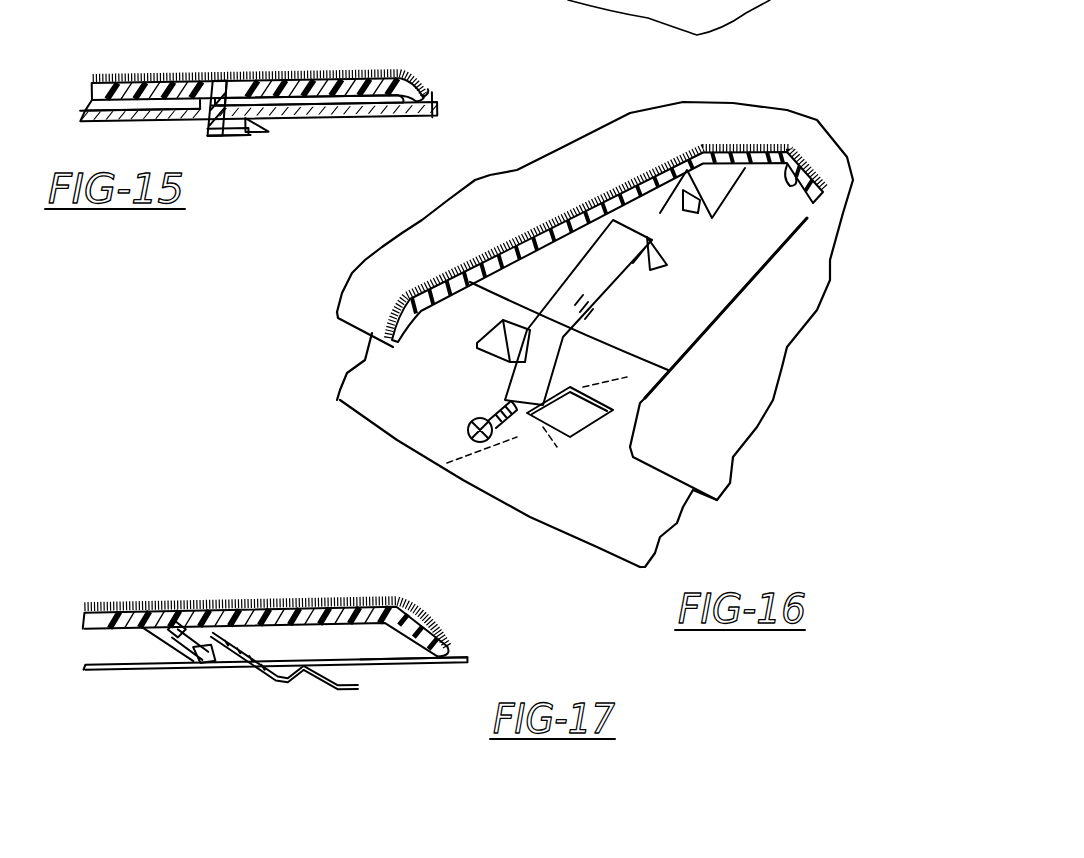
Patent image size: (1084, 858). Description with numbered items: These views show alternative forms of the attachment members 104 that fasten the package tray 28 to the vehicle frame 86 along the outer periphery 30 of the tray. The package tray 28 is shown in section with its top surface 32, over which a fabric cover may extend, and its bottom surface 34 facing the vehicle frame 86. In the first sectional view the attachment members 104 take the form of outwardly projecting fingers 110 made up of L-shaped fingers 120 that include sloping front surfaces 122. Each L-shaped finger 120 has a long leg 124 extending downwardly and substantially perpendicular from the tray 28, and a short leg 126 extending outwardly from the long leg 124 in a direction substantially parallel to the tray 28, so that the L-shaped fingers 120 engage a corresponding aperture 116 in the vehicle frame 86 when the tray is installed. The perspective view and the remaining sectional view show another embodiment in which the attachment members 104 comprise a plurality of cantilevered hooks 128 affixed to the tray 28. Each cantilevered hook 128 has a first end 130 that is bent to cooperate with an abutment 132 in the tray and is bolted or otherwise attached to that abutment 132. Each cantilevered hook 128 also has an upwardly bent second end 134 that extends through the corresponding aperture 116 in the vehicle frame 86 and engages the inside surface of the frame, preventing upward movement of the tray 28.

In FIG. 15, the package tray 28 is at (137, 90).
In FIG. 16, the package tray 28 is at (773, 343).
In FIG. 17, the package tray 28 is at (332, 602).
In FIG. 15, the outer periphery 30 is at (425, 97).
In FIG. 16, the outer periphery 30 is at (352, 312).
In FIG. 17, the outer periphery 30 is at (448, 652).
In FIG. 15, the top surface 32 is at (267, 72).
In FIG. 16, the top surface 32 is at (562, 205).
In FIG. 17, the top surface 32 is at (360, 603).
In FIG. 15, the bottom surface 34 is at (333, 98).
In FIG. 16, the bottom surface 34 is at (797, 168).
In FIG. 17, the bottom surface 34 is at (402, 662).
In FIG. 15, the vehicle frame 86 is at (390, 110).
In FIG. 16, the vehicle frame 86 is at (425, 410).
In FIG. 17, the vehicle frame 86 is at (140, 668).
In FIG. 15, the attachment members 104 is at (316, 180).
In FIG. 16, the attachment members 104 is at (638, 299).
In FIG. 17, the attachment members 104 is at (248, 718).
In FIG. 15, the outwardly projecting fingers 110 is at (234, 160).
In FIG. 15, the aperture 116 is at (203, 127).
In FIG. 16, the aperture 116 is at (560, 422).
In FIG. 17, the aperture 116 is at (221, 668).
In FIG. 15, the L-shaped fingers 120 is at (207, 133).
In FIG. 15, the sloping front surfaces 122 is at (262, 120).
In FIG. 15, the long leg 124 is at (223, 87).
In FIG. 15, the short leg 126 is at (240, 134).
In FIG. 16, the cantilevered hooks 128 is at (618, 265).
In FIG. 17, the cantilevered hooks 128 is at (257, 672).
In FIG. 16, the first end 130 is at (667, 262).
In FIG. 17, the first end 130 is at (202, 663).
In FIG. 16, the abutment 132 is at (700, 200).
In FIG. 17, the abutment 132 is at (199, 608).
In FIG. 16, the upwardly bent second end 134 is at (540, 285).
In FIG. 17, the upwardly bent second end 134 is at (310, 668).